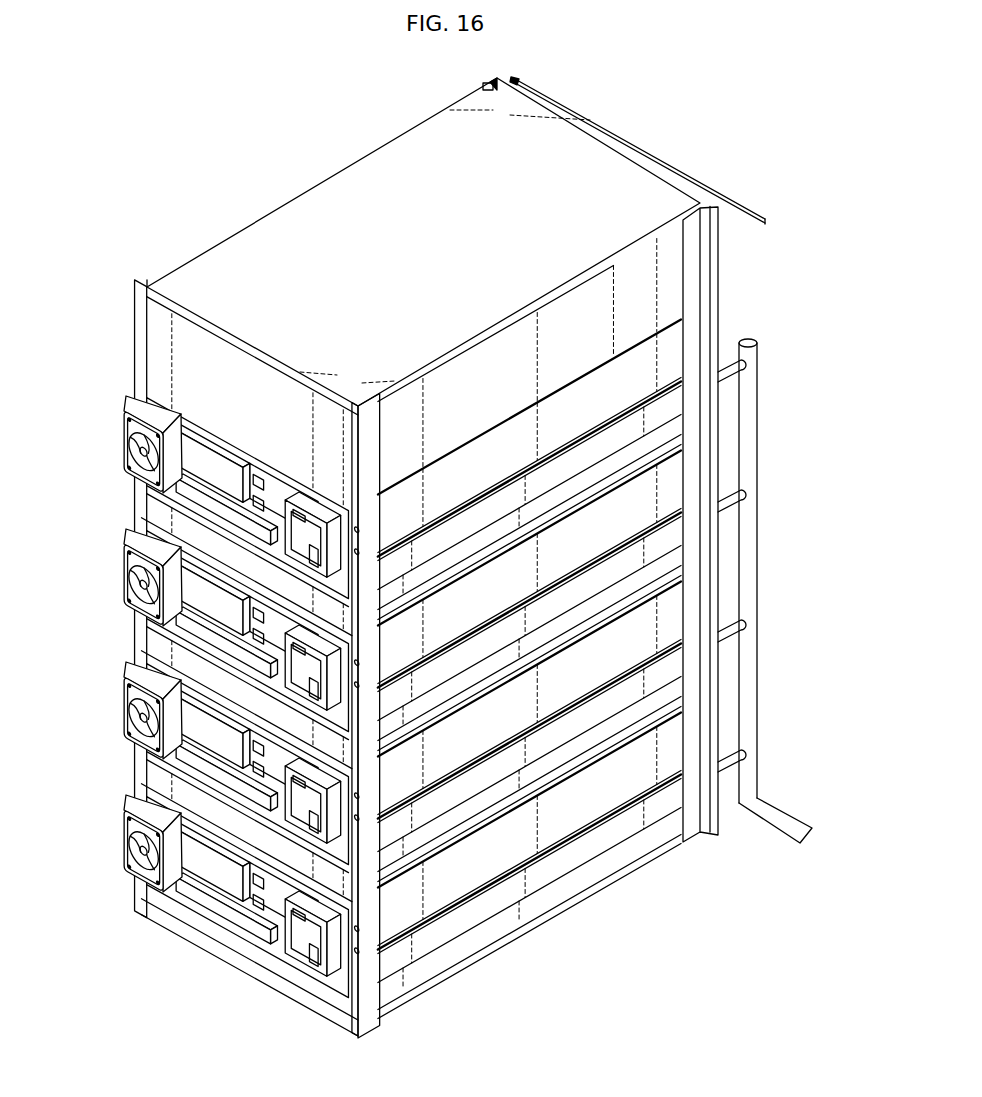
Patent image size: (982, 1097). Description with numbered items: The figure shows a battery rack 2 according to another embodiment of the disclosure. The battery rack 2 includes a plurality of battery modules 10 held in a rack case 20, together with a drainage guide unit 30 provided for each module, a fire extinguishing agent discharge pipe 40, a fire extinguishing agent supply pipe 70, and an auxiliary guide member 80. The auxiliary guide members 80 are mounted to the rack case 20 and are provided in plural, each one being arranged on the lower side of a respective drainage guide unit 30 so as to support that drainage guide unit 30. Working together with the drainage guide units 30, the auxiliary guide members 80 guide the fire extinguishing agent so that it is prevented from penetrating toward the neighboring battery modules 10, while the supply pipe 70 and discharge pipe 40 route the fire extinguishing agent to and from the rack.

The battery rack 2 is at (436, 557).
The battery module 10 is at (369, 610).
The rack case 20 is at (132, 347).
The drainage guide unit 30 is at (152, 603).
The fire extinguishing agent discharge pipe 40 is at (752, 462).
The fire extinguishing agent supply pipe 70 is at (590, 122).
The auxiliary guide member 80 is at (160, 630).